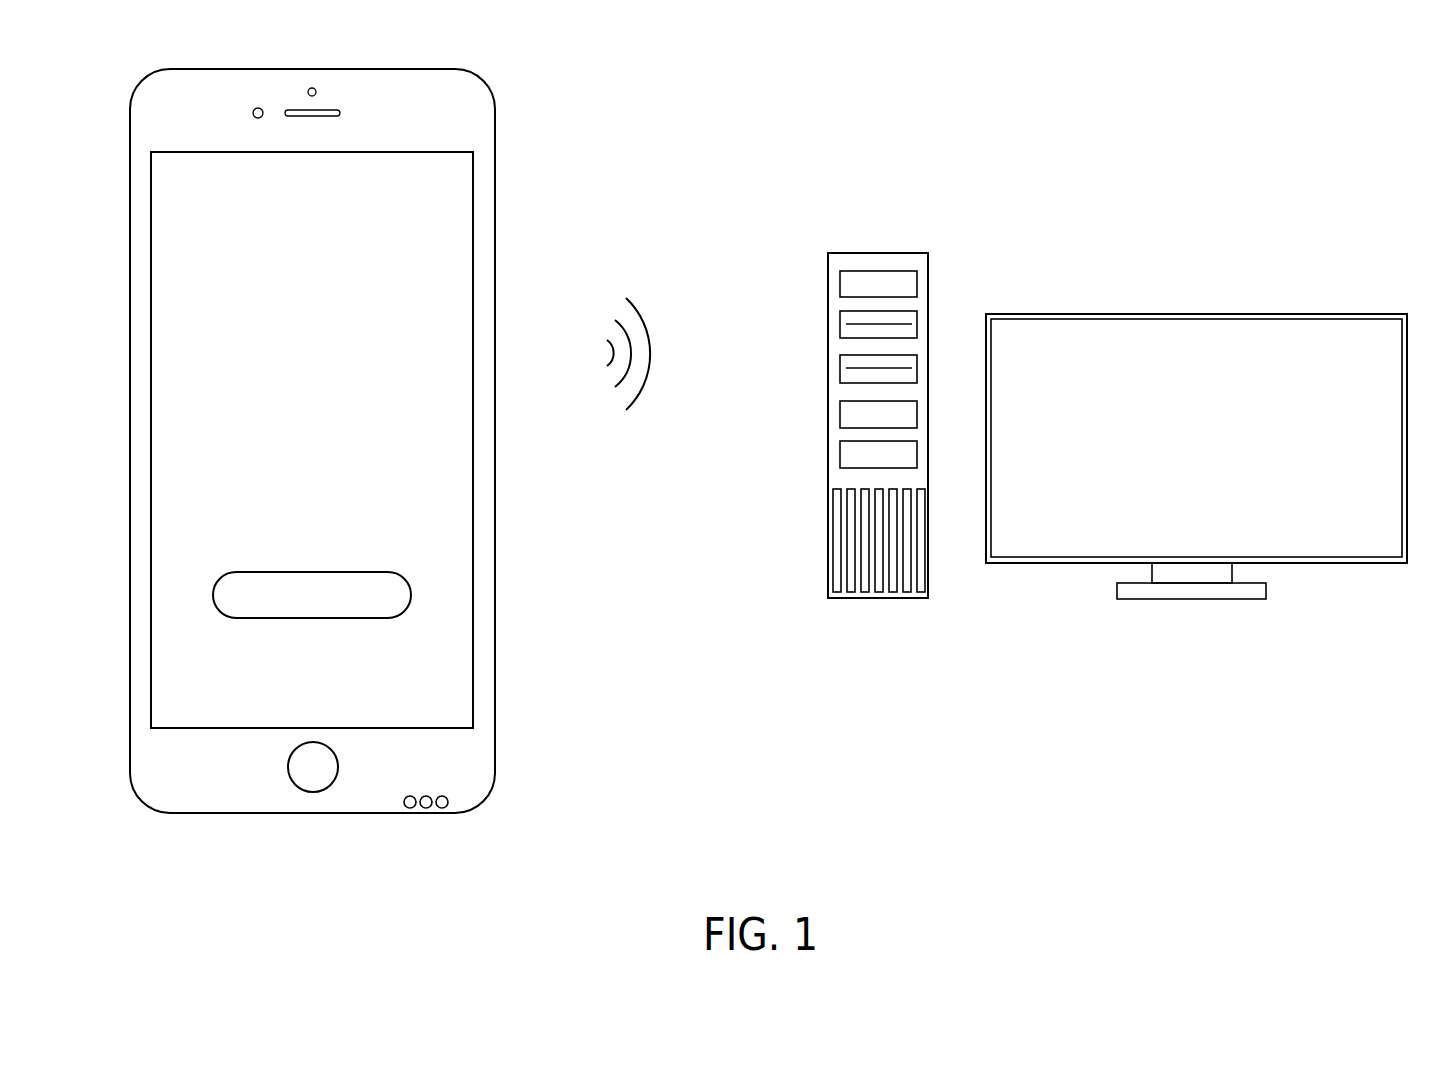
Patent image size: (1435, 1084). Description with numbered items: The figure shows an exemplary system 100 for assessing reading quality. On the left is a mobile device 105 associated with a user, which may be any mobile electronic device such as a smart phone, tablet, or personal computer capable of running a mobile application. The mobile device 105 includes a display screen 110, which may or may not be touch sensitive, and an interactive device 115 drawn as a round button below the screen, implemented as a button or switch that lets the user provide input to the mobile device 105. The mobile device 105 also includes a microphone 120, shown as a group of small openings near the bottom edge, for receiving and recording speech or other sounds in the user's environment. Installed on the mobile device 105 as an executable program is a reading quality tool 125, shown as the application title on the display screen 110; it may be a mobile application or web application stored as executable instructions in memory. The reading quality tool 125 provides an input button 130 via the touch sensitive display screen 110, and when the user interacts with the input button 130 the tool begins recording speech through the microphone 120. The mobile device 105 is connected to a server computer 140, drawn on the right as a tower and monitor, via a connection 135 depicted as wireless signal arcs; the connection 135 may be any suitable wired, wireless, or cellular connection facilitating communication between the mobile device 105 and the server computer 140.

The system 100 is at (1107, 74).
The mobile device 105 is at (492, 92).
The display screen 110 is at (467, 173).
The interactive device 115 is at (311, 792).
The microphone 120 is at (447, 808).
The reading quality tool 125 is at (417, 262).
The input button 130 is at (407, 581).
The connection 135 is at (635, 305).
The server computer 140 is at (930, 260).